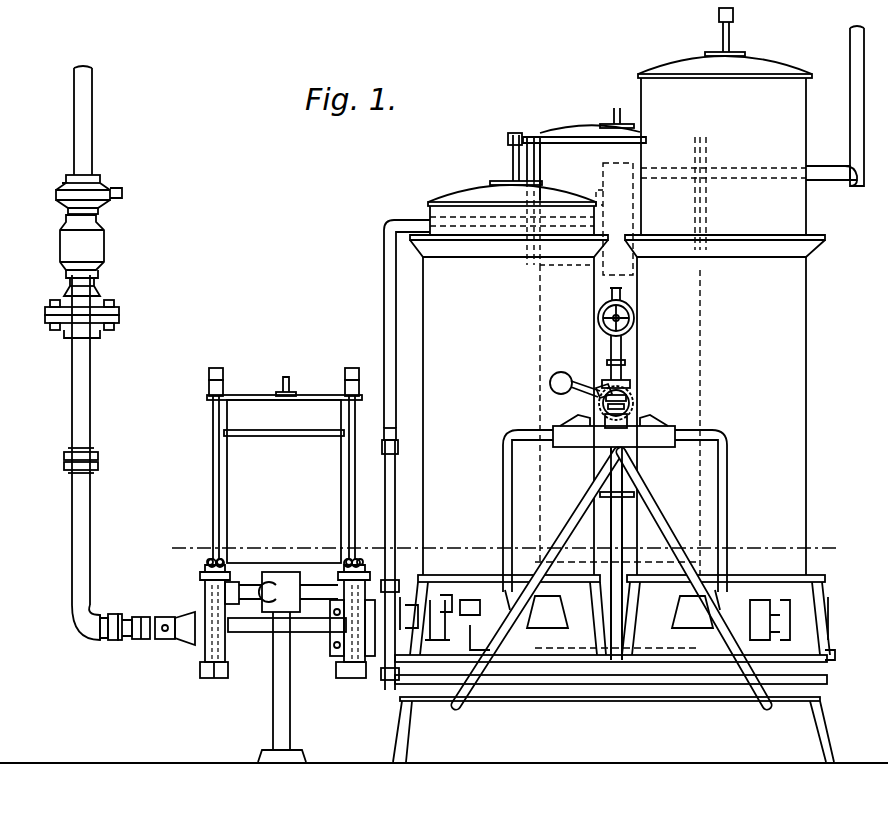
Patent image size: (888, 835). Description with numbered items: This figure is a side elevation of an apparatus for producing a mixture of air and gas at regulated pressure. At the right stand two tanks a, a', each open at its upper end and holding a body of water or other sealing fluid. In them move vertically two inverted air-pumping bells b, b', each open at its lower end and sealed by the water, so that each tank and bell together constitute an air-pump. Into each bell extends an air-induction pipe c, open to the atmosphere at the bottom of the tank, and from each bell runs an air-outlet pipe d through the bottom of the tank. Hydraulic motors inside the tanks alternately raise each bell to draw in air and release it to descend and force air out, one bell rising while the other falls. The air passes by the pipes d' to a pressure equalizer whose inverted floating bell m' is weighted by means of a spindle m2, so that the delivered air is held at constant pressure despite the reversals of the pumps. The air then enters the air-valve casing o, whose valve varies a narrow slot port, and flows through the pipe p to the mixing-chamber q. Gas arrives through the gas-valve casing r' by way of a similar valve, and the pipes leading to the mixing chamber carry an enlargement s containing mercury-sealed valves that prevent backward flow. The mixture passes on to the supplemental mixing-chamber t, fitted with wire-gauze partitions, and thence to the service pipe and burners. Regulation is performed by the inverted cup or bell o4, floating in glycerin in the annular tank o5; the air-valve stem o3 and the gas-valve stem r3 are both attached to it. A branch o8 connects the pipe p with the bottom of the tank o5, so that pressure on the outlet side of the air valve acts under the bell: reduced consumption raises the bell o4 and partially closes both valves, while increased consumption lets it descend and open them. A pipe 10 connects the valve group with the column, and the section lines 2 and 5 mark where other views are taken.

The tank a is at (504, 394).
The tank a' is at (730, 331).
The air-pumping bell b is at (407, 307).
The air-pumping bell b' is at (738, 106).
The air-induction pipe c is at (548, 598).
The air-outlet pipe d is at (611, 560).
The pipe d' is at (630, 482).
The floating bell m' is at (584, 333).
The spindle m2 is at (612, 160).
The air-valve casing o is at (230, 645).
The valve stem o3 is at (212, 470).
The inverted cup or bell o4 is at (258, 402).
The annular tank o5 is at (236, 512).
The branch o8 is at (185, 612).
The pipe p is at (72, 560).
The mixing-chamber q is at (105, 245).
The gas valve r' is at (338, 633).
The gas-valve stem r3 is at (384, 492).
The enlargement s is at (66, 332).
The supplemental mixing-chamber t is at (102, 184).
The section line 10 is at (240, 590).
The section line 2 is at (612, 606).
The section line 5 is at (182, 548).